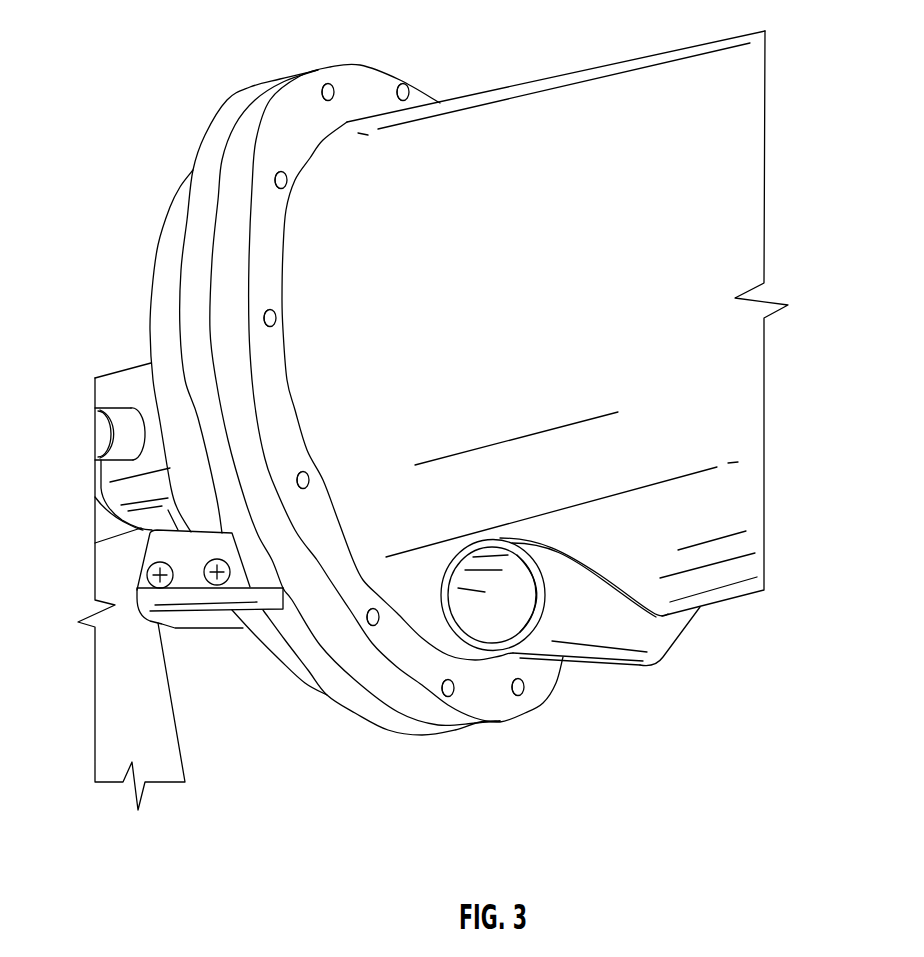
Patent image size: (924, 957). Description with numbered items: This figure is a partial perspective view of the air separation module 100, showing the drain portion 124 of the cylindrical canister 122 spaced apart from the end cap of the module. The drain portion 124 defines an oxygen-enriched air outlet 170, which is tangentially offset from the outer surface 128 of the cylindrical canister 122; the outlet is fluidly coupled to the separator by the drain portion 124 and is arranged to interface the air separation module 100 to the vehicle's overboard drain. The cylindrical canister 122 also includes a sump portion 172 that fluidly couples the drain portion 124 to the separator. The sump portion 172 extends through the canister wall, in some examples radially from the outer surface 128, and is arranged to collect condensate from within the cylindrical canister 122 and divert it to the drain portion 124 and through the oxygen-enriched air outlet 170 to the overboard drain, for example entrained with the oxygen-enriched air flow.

The air separation module 100 is at (127, 873).
The cylindrical canister 122 is at (537, 103).
The drain portion 124 is at (587, 637).
The outer surface 128 is at (728, 425).
The oxygen-enriched air outlet 170 is at (479, 611).
The sump portion 172 is at (642, 672).